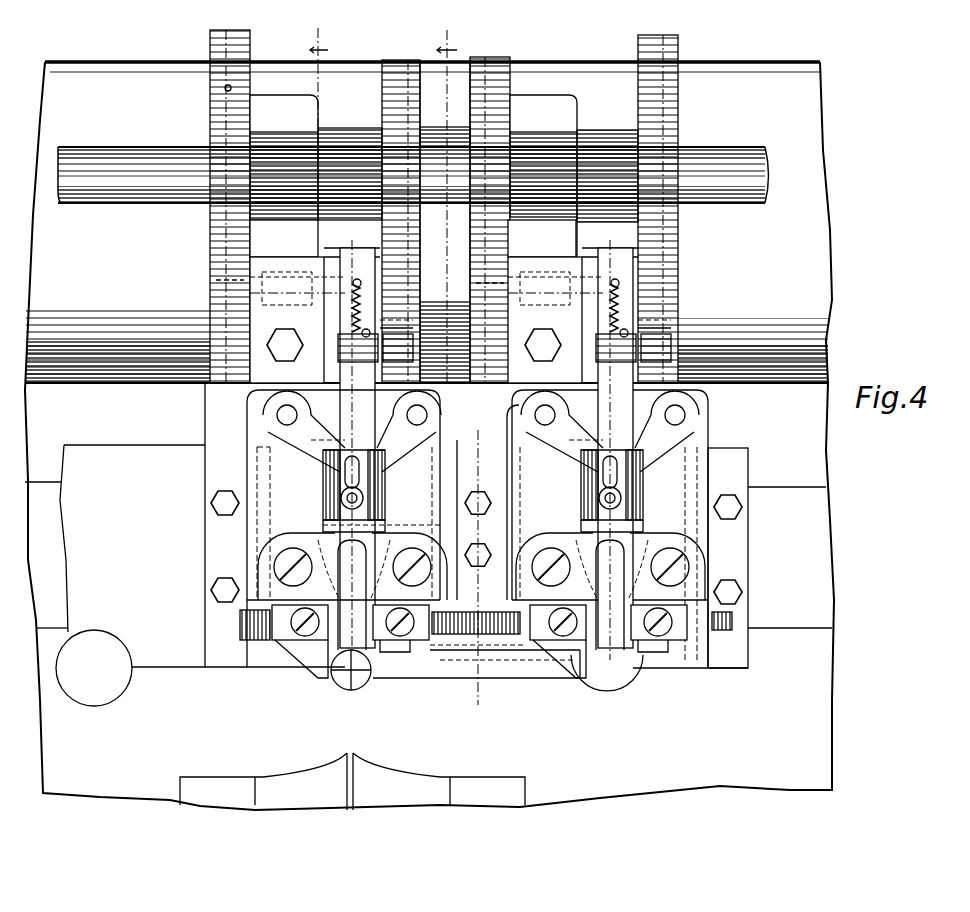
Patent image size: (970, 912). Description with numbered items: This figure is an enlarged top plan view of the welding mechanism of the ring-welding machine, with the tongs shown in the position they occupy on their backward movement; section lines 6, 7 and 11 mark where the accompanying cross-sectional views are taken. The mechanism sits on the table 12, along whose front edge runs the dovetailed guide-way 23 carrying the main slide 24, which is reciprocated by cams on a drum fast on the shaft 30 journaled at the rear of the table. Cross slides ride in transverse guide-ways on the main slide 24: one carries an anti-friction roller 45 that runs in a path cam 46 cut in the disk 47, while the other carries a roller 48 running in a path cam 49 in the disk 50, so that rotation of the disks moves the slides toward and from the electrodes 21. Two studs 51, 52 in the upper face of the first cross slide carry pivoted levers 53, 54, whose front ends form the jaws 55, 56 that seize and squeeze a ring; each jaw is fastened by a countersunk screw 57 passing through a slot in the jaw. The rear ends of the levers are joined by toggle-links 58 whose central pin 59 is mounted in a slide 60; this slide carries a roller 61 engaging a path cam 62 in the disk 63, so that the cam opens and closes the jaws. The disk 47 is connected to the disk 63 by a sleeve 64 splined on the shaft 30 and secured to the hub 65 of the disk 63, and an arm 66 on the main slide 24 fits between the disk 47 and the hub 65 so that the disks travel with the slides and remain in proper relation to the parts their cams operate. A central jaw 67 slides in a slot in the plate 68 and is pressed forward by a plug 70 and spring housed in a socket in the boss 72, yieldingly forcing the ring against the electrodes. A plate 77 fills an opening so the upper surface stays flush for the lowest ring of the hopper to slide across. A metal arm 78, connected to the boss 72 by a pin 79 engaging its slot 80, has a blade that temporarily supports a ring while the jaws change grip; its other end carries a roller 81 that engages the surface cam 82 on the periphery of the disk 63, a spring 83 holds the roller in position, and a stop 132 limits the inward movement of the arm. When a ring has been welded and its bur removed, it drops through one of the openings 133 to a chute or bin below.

The section line 6— 6 is at (457, 378).
The section line 7— 7 is at (319, 68).
The section line 11— 11 is at (210, 295).
The table 12 is at (818, 730).
The electrodes 21 is at (332, 770).
The dovetailed guide-way 23 is at (56, 492).
The main slide 24 is at (190, 668).
The shaft 30 is at (736, 162).
The anti-friction roller 45 is at (230, 280).
The path cam 46 is at (224, 88).
The disk 47 is at (215, 50).
The anti-friction roller 48 is at (484, 283).
The path cam 49 is at (515, 62).
The disk 50 is at (485, 90).
The stud 51 is at (274, 563).
The stud 52 is at (412, 628).
The lever 53 is at (248, 462).
The lever 54 is at (440, 386).
The jaw 55 is at (320, 652).
The jaw 56 is at (368, 682).
The countersunk screw 57 is at (302, 626).
The toggle-links 58 is at (263, 412).
The central pin 59 is at (322, 442).
The slide 60 is at (325, 258).
The anti-friction roller 61 is at (398, 262).
The path cam 62 is at (395, 85).
The disk 63 is at (420, 75).
The sleeve 64 is at (290, 140).
The hub 65 is at (345, 140).
The arm 66 is at (255, 115).
The central jaw 67 is at (365, 562).
The plate 68 is at (300, 594).
The plug 70 is at (380, 512).
The boss 72 is at (372, 486).
The plate 77 is at (500, 662).
The metal arm 78 is at (312, 526).
The pin 79 is at (341, 499).
The slot 80 is at (345, 490).
The anti-friction roller 81 is at (414, 346).
The surface cam 82 is at (414, 322).
The spring 83 is at (350, 316).
The stop 132 is at (345, 342).
The openings 133 is at (625, 692).